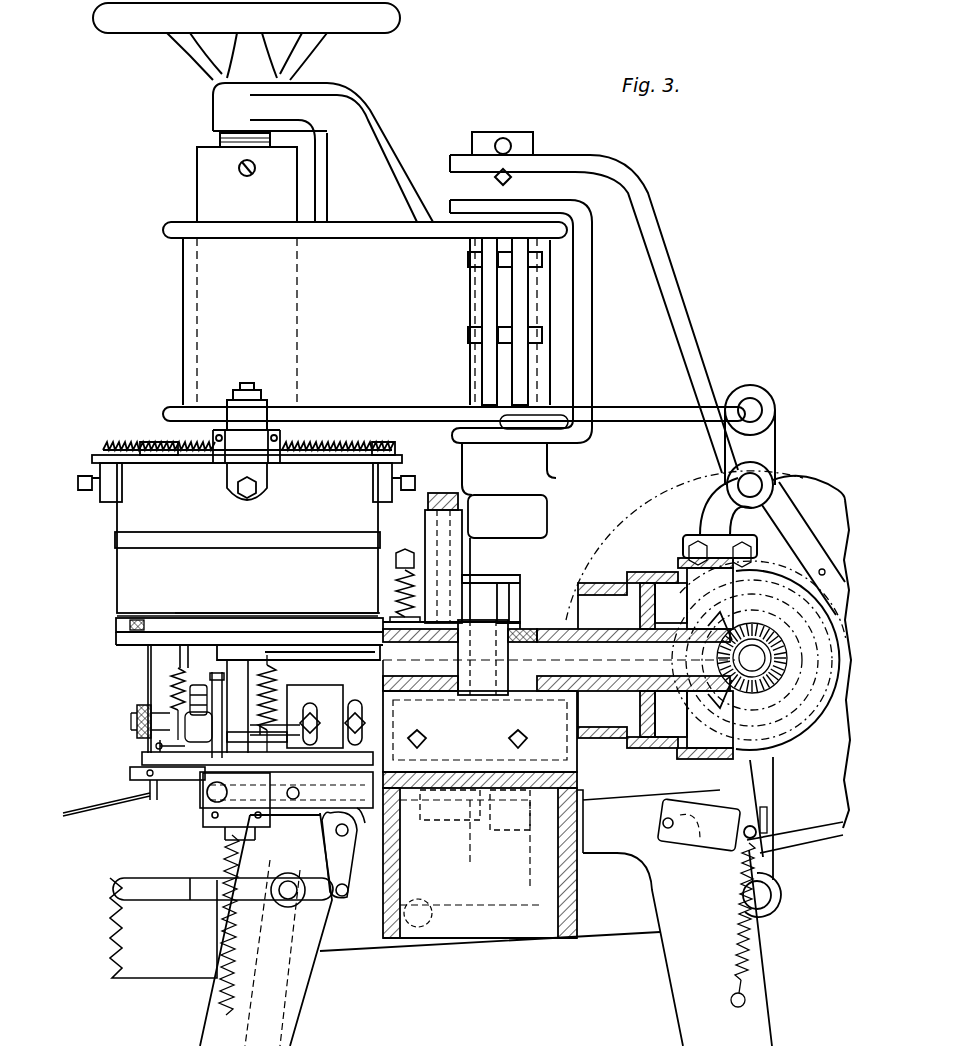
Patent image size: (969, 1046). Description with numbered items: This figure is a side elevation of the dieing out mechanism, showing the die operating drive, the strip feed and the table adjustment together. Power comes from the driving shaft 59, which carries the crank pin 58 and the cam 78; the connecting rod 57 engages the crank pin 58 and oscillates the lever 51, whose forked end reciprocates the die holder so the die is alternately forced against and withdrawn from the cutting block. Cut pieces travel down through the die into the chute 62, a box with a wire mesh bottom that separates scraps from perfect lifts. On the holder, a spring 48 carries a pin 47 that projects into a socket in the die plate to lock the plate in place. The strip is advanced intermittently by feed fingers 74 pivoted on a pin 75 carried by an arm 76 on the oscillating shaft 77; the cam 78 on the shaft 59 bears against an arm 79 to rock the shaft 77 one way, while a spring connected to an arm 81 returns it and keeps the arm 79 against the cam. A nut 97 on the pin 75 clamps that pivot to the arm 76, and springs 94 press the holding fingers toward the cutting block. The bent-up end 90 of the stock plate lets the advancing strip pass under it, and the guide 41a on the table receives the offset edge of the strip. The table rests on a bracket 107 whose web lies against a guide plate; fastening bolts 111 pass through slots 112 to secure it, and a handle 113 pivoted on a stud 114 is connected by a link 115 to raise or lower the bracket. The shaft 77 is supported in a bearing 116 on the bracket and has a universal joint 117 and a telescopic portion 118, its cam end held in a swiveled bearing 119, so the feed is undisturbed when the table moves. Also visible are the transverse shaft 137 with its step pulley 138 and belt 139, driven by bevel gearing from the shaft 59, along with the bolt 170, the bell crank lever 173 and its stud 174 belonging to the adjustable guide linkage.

The bent-up forward end 90 is at (118, 626).
The guide 41a is at (120, 643).
The bracket 107 is at (293, 677).
The bolt 170 is at (397, 590).
The stud 174 is at (466, 532).
The bell crank lever 173 is at (495, 575).
The transverse shaft 137 is at (540, 628).
The step pulley 138 is at (640, 568).
The belt 139 is at (695, 545).
The driving shaft 59 is at (752, 658).
The crank pin 58 is at (775, 732).
The connecting rod 57 is at (774, 790).
The cam 78 is at (780, 822).
The arm 79 is at (730, 790).
The oscillating shaft 77 is at (615, 820).
The swiveled bearing 119 is at (705, 862).
The lever 51 is at (380, 950).
The chute 62 is at (163, 928).
The handle 113 is at (113, 887).
The stud 114 is at (288, 885).
The arm 81 is at (205, 822).
The bearing 116 is at (286, 797).
The link 115 is at (490, 821).
The universal joint 117 is at (455, 820).
The telescopic portion 118 is at (515, 820).
The slots 112 is at (355, 712).
The fastening bolts 111 is at (309, 748).
The feed fingers 74 is at (250, 703).
The arm 76 is at (212, 746).
The pin 75 is at (131, 722).
The springs 94 is at (190, 706).
The nut 97 is at (172, 700).
The spring 48 is at (130, 772).
The pin 47 is at (152, 798).